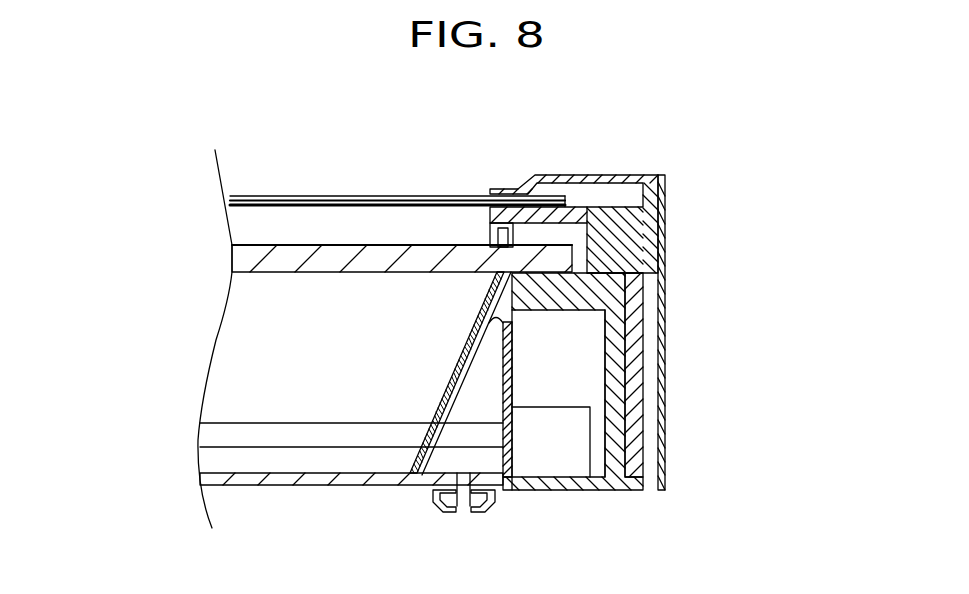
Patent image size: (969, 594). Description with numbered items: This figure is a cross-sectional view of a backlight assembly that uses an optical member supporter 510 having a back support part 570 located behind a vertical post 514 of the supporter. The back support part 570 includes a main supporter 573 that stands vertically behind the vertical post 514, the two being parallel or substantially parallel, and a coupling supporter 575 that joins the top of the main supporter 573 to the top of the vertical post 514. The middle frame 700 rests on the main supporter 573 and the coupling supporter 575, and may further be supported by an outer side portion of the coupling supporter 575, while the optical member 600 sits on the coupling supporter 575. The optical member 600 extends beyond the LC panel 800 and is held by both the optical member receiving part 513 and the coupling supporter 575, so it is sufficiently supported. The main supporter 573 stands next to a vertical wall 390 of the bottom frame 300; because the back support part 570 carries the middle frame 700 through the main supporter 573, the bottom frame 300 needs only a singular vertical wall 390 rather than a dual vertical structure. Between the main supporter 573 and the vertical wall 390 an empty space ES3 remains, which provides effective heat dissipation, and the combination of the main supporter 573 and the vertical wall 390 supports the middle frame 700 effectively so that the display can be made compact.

The LC panel 800 is at (371, 196).
The optical member 600 is at (235, 255).
The middle frame 700 is at (620, 228).
The coupling supporter 575 is at (603, 273).
The back support part 570 is at (612, 302).
The optical member receiving part 513 is at (497, 275).
The main supporter 573 is at (622, 358).
The empty space ES3 is at (604, 416).
The vertical wall 390 is at (640, 462).
The bottom frame 300 is at (300, 486).
The optical member supporter 510 is at (424, 477).
The vertical post 514 is at (512, 377).